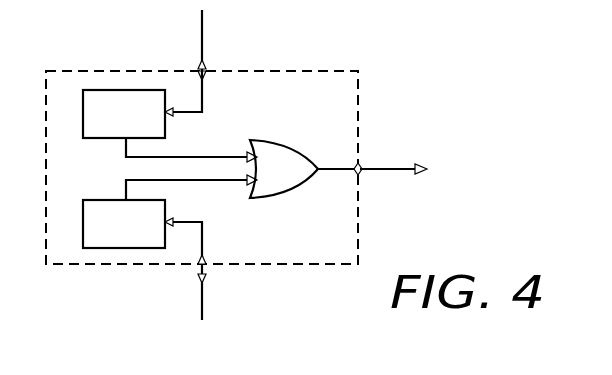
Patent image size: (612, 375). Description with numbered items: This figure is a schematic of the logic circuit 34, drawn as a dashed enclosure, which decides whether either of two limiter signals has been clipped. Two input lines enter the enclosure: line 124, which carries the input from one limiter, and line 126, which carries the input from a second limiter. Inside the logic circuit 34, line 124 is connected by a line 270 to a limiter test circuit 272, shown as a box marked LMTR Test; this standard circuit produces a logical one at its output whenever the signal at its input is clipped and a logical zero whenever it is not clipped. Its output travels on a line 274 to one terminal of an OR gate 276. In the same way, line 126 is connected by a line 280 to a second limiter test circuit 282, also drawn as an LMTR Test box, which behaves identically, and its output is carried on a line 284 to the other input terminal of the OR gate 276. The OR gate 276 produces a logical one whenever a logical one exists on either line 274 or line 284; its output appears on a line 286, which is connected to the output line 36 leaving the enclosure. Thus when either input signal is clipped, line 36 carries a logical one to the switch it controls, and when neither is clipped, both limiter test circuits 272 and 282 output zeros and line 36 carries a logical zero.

The logic circuit 34 is at (262, 72).
The line 124 is at (205, 31).
The line 126 is at (205, 305).
The line 270 is at (205, 97).
The limiter test circuit 272 is at (83, 115).
The line 274 is at (172, 157).
The OR gate 276 is at (277, 146).
The line 280 is at (205, 243).
The limiter test circuit 282 is at (83, 220).
The line 284 is at (178, 181).
The line 286 is at (337, 171).
The line 36 is at (387, 168).